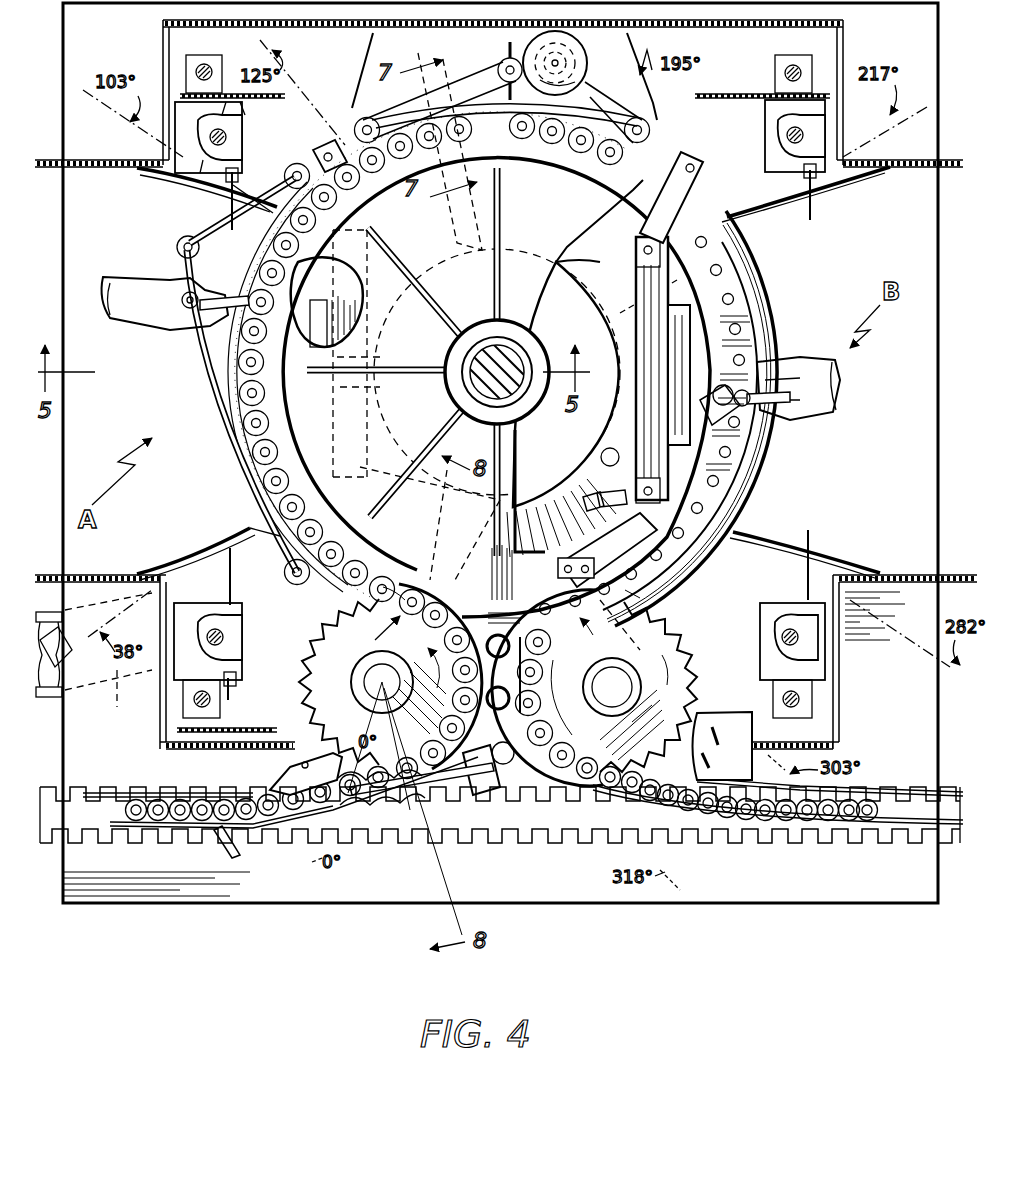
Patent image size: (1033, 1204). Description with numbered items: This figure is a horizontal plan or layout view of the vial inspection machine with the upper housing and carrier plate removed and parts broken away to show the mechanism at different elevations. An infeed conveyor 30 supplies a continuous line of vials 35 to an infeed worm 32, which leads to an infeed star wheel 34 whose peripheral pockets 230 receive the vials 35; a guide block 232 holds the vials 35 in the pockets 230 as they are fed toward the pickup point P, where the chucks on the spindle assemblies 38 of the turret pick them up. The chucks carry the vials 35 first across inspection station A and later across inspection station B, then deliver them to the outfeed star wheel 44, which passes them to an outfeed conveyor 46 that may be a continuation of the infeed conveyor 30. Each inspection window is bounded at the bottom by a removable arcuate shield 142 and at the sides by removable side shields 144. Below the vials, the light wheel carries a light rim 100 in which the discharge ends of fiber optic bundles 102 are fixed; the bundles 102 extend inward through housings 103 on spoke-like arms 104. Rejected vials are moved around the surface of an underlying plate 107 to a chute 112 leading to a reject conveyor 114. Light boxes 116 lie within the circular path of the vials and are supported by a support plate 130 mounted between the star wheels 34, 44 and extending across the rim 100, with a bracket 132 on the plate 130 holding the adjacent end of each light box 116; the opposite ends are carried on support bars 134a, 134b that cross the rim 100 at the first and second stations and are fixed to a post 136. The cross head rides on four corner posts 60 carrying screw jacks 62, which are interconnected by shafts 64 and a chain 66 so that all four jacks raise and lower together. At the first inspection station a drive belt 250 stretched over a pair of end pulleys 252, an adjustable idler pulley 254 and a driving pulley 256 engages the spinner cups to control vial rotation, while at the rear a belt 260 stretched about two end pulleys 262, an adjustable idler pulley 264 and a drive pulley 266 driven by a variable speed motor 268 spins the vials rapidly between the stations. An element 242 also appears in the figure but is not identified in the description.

The infeed conveyor 30 is at (148, 838).
The infeed worm 32 is at (330, 810).
The infeed star wheel 34 is at (390, 676).
The vials 35 is at (345, 282).
The spindle assemblies 38 is at (362, 180).
The outfeed star wheel 44 is at (624, 687).
The outfeed conveyor 46 is at (843, 838).
The corner posts 60 is at (206, 65).
The screw jacks 62 is at (235, 135).
The shafts 64 is at (814, 215).
The chain 66 is at (735, 92).
The light rim 100 is at (660, 575).
The fiber optic bundles 102 is at (688, 570).
The housings 103 is at (582, 326).
The spoke-like arms 104 is at (592, 426).
The underlying plate 107 is at (614, 277).
The chute 112 is at (597, 527).
The reject conveyor 114 is at (84, 671).
The light boxes 116 is at (700, 290).
The support plate 130 is at (492, 597).
The bracket 132 is at (665, 605).
The support bar 134a is at (322, 143).
The support bar 134b is at (700, 170).
The post 136 is at (690, 166).
The arcuate shield 142 is at (228, 395).
The side shields 144 is at (168, 178).
The pockets 230 is at (340, 625).
The guide block 232 is at (537, 862).
The belt roller 242 is at (370, 117).
The drive belt 250 is at (212, 365).
The end pulleys 252 is at (298, 165).
The adjustable idler pulley 254 is at (185, 266).
The driving pulley 256 is at (180, 240).
The belt 260 is at (460, 100).
The end pulleys 262 is at (650, 128).
The adjustable idler pulley 264 is at (500, 62).
The drive pulley 266 is at (585, 48).
The variable speed motor 268 is at (584, 72).